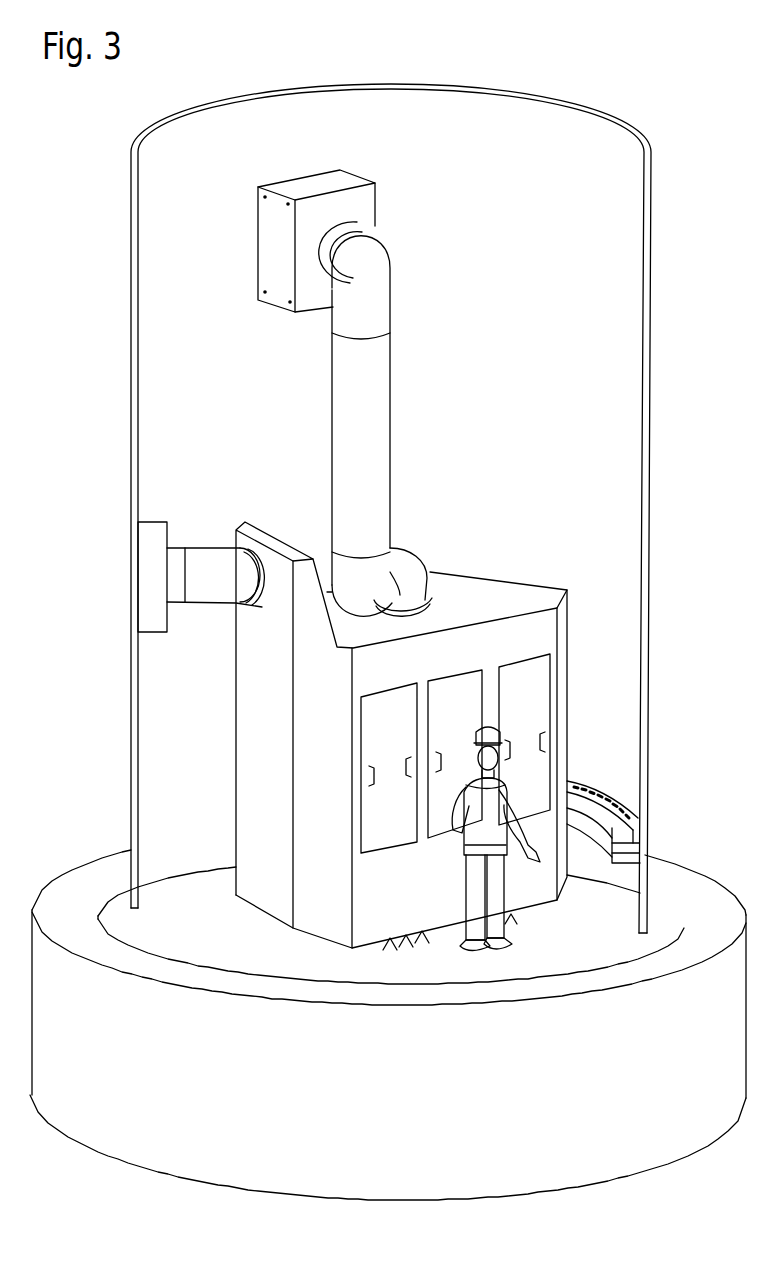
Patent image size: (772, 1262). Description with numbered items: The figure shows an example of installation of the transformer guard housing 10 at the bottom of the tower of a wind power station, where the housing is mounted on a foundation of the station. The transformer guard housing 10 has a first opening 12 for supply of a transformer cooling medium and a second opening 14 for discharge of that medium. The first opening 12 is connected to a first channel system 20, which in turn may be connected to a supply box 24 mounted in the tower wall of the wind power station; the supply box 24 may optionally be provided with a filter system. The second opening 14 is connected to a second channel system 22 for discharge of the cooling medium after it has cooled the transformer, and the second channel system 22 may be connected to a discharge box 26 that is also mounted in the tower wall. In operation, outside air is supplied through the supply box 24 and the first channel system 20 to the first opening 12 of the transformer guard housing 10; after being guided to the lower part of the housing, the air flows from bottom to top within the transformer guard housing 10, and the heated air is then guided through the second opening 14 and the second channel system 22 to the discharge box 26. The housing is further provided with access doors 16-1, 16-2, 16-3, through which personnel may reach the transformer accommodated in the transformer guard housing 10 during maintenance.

The transformer guard housing 10 is at (520, 568).
The first opening 12 is at (272, 600).
The second opening 14 is at (435, 598).
The access door 16-1 is at (382, 718).
The access door 16-2 is at (447, 693).
The access door 16-3 is at (535, 680).
The first channel system 20 is at (206, 553).
The second channel system 22 is at (380, 410).
The supply box 24 is at (152, 530).
The discharge box 26 is at (352, 180).